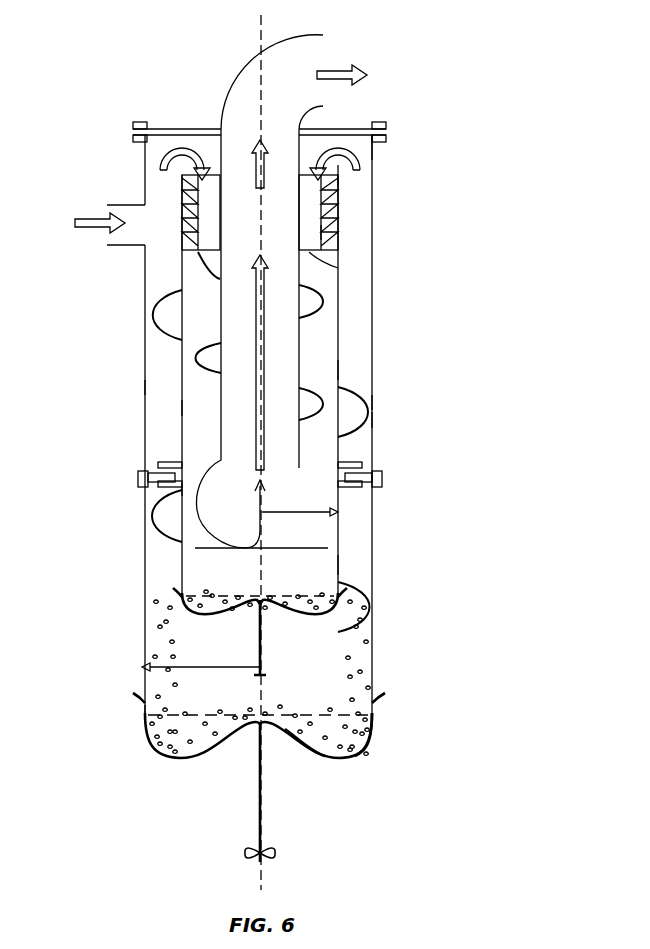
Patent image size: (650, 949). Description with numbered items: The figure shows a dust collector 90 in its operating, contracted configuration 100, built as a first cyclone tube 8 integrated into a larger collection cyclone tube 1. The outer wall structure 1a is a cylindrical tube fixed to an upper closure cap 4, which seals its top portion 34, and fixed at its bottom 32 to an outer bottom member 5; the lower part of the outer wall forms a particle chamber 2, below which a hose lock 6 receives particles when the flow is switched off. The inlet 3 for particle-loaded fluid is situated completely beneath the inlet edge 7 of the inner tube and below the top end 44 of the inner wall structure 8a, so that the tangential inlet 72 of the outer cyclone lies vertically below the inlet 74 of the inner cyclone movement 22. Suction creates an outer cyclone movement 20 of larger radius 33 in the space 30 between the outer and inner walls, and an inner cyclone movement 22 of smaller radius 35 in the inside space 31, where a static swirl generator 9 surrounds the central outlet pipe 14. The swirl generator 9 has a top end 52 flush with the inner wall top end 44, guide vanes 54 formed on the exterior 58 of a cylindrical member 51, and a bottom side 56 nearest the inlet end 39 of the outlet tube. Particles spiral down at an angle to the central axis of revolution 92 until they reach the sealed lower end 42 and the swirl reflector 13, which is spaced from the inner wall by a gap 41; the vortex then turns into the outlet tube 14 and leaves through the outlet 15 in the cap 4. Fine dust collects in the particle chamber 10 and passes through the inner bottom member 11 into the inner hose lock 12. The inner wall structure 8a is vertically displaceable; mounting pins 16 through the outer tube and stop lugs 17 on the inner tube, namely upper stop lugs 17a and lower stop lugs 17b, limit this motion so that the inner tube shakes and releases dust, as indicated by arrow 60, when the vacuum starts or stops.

The contracted configuration 100 is at (521, 61).
The collection cyclone tube 1 is at (372, 300).
The outer wall structure 1a is at (372, 420).
The particle chamber 2 is at (375, 725).
The inlet 3 is at (133, 215).
The upper closure cap 4 is at (345, 132).
The outer bottom member 5 is at (303, 720).
The hose lock 6 is at (178, 758).
The inlet edge 7 is at (340, 170).
The first cyclone tube 8 is at (338, 345).
The inner wall structure 8a is at (338, 370).
The swirl generator 9 is at (182, 197).
The particle chamber 10 is at (182, 608).
The inner bottom member 11 is at (277, 600).
The inner hose lock 12 is at (305, 700).
The swirl reflector 13 is at (215, 568).
The central outlet pipe 14 is at (217, 300).
The outlet 15 is at (240, 80).
The mounting pins 16 is at (384, 480).
The stop lugs 17 is at (368, 489).
The upper stop lugs 17a is at (356, 460).
The lower stop lugs 17b is at (348, 486).
The outer cyclone movement 20 is at (372, 402).
The inner cyclone movement 22 is at (340, 390).
The space 30 is at (163, 387).
The inside space 31 is at (192, 408).
The bottom 32 is at (150, 714).
The radius 33 is at (190, 668).
The top portion 34 is at (145, 152).
The radius 35 is at (320, 515).
The inlet end 39 is at (175, 492).
The gap 41 is at (340, 565).
The lower end 42 is at (330, 637).
The top end 44 is at (338, 180).
The cylindrical member 51 is at (302, 180).
The top end 52 is at (373, 142).
The guide vanes 54 is at (322, 190).
The bottom side 56 is at (310, 253).
The exterior 58 is at (323, 232).
The flow direction 60 is at (382, 460).
The tangential inlet 72 is at (142, 228).
The inlet 74 is at (195, 173).
The dust collector 90 is at (147, 70).
The central axis of revolution 92 is at (261, 45).